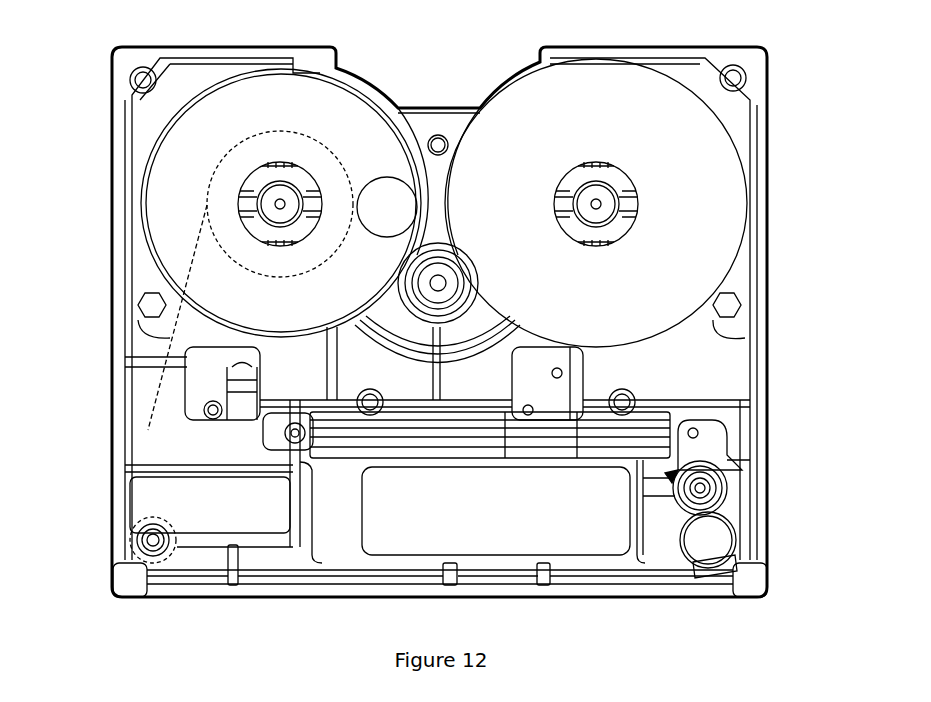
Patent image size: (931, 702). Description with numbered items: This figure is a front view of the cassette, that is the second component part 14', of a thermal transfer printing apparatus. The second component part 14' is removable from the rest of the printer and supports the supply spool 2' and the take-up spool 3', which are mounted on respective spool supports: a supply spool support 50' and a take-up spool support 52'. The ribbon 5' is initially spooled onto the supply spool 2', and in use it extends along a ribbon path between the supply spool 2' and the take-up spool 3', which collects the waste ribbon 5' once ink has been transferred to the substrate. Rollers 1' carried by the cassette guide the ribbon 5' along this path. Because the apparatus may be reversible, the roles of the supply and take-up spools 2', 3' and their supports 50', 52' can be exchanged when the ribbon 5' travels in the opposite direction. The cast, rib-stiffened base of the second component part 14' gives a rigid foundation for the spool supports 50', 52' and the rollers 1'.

The rollers 1' is at (172, 593).
The supply spool 2' is at (281, 181).
The take-up spool 3' is at (634, 234).
The ribbon 5' is at (123, 386).
The second component part 14' is at (465, 359).
The supply spool support 50' is at (187, 135).
The take-up spool support 52' is at (549, 135).